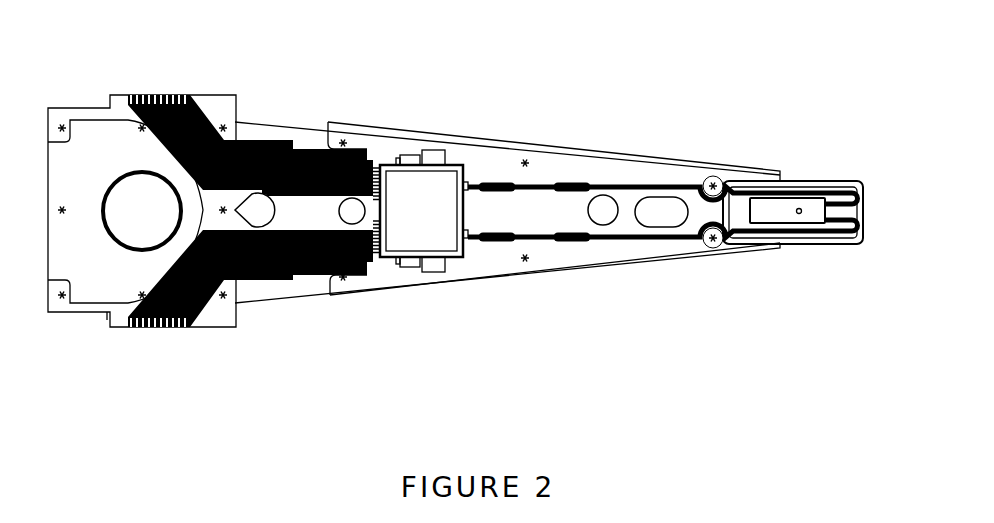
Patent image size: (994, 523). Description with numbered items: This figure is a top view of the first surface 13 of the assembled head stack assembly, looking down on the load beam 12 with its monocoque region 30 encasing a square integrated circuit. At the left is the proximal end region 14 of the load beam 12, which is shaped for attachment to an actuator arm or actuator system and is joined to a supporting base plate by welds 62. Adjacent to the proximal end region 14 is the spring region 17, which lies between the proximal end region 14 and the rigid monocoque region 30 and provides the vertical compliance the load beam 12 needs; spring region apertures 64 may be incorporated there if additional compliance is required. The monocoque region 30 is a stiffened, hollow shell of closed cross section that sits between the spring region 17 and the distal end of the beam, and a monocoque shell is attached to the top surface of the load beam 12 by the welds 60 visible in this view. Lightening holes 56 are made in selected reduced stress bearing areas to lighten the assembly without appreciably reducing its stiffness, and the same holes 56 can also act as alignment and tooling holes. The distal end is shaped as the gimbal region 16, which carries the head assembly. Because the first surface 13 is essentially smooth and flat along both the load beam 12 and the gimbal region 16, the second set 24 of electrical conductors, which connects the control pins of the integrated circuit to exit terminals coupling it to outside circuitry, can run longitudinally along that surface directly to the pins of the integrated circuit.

The load beam 12 is at (365, 325).
The first surface 13 is at (405, 283).
The proximal end region 14 is at (153, 360).
The gimbal region 16 is at (807, 232).
The spring region 17 is at (281, 127).
The second set of electrical conductors 24 is at (288, 282).
The monocoque region 30 is at (517, 322).
The lightening holes 56 is at (258, 218).
The welds 60 is at (713, 185).
The welds 62 is at (62, 127).
The spring region apertures 64 is at (243, 278).